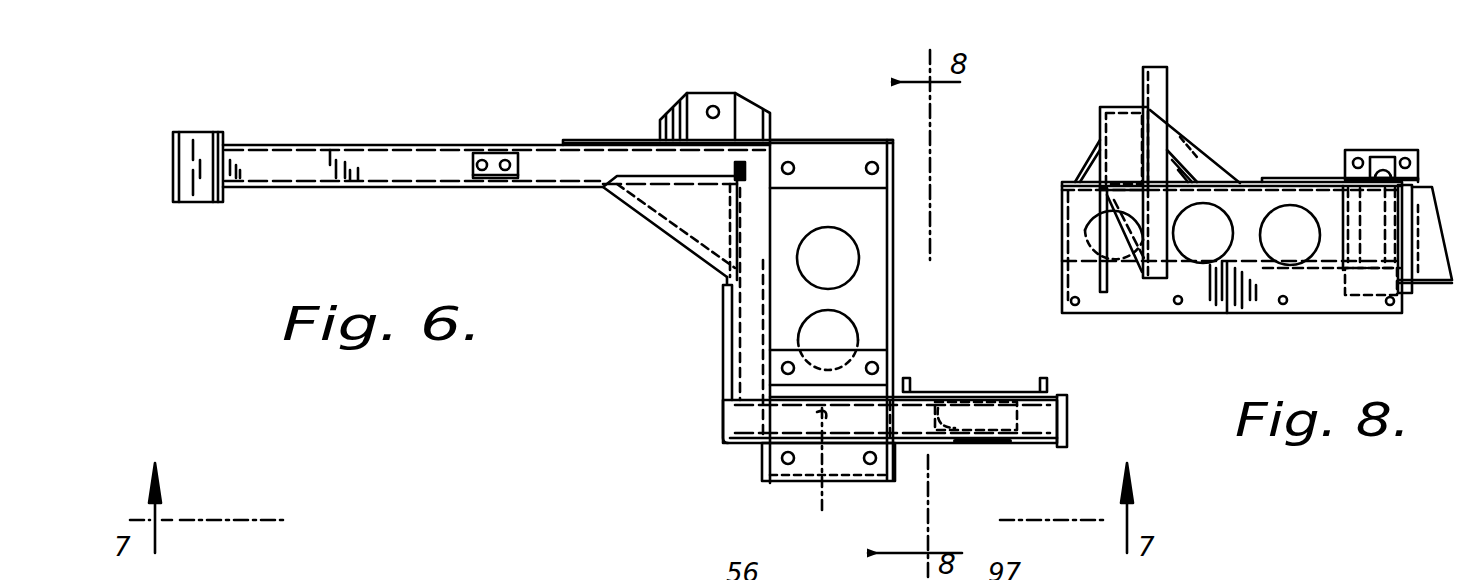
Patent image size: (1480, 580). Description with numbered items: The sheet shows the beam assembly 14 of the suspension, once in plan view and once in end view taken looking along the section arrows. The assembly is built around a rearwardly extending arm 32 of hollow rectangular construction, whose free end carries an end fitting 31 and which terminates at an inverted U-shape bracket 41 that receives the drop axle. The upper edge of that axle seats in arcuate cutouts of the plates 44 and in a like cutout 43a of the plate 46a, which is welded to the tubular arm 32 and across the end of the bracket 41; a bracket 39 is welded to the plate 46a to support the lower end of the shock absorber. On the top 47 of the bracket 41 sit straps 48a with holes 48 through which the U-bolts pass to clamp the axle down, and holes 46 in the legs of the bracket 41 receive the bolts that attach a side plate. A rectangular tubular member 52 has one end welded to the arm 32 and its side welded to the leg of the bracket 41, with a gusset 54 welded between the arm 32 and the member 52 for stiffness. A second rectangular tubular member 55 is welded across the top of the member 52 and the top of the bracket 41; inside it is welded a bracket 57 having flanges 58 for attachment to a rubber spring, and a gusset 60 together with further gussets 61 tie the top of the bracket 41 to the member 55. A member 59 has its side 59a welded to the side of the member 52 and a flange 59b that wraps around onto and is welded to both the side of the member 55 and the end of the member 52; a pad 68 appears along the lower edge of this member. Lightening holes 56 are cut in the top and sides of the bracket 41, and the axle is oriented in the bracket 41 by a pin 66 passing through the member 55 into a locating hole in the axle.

In FIG. 6, the beam assembly 14 is at (293, 190).
In FIG. 6, the end block 31 is at (208, 130).
In FIG. 6, the rearwardly extending arm 32 is at (442, 126).
In FIG. 8, the rearwardly extending arm 32 is at (1443, 238).
In FIG. 6, the bracket 39 is at (700, 93).
In FIG. 8, the bracket 39 is at (1430, 287).
In FIG. 6, the inverted U-shape bracket 41 is at (896, 236).
In FIG. 6, the cutout 43a is at (820, 145).
In FIG. 6, the plates 44 is at (880, 358).
In FIG. 8, the plates 44 is at (1447, 212).
In FIG. 8, the holes 46 is at (1071, 300).
In FIG. 6, the plate 46a is at (612, 140).
In FIG. 8, the plate 46a is at (1440, 190).
In FIG. 6, the top of bracket 47 is at (880, 210).
In FIG. 8, the top of bracket 47 is at (1228, 313).
In FIG. 6, the holes 48 is at (788, 162).
In FIG. 6, the straps 48a is at (835, 185).
In FIG. 6, the rectangular tubular member 52 is at (750, 305).
In FIG. 6, the gusset 54 is at (640, 205).
In FIG. 6, the rectangular tubular member 55 is at (960, 442).
In FIG. 8, the rectangular tubular member 55 is at (1118, 105).
In FIG. 6, the holes 56 is at (850, 330).
In FIG. 6, the bracket 57 is at (1000, 392).
In FIG. 8, the bracket 57 is at (1158, 82).
In FIG. 6, the flanges 58 is at (1048, 387).
In FIG. 8, the flanges 58 is at (1090, 237).
In FIG. 6, the member 59 is at (727, 372).
In FIG. 8, the member 59 is at (1233, 127).
In FIG. 6, the side of member 59 59a is at (722, 415).
In FIG. 8, the side of member 59 59a is at (1238, 122).
In FIG. 6, the flange of member 59 59b is at (723, 440).
In FIG. 6, the gusset 60 is at (882, 362).
In FIG. 8, the gusset 60 is at (1208, 123).
In FIG. 6, the gussets 61 is at (765, 468).
In FIG. 8, the gussets 61 is at (1085, 165).
In FIG. 6, the pin 66 is at (820, 483).
In FIG. 6, the pad 68 is at (1010, 442).
In FIG. 8, the pad 68 is at (1100, 265).